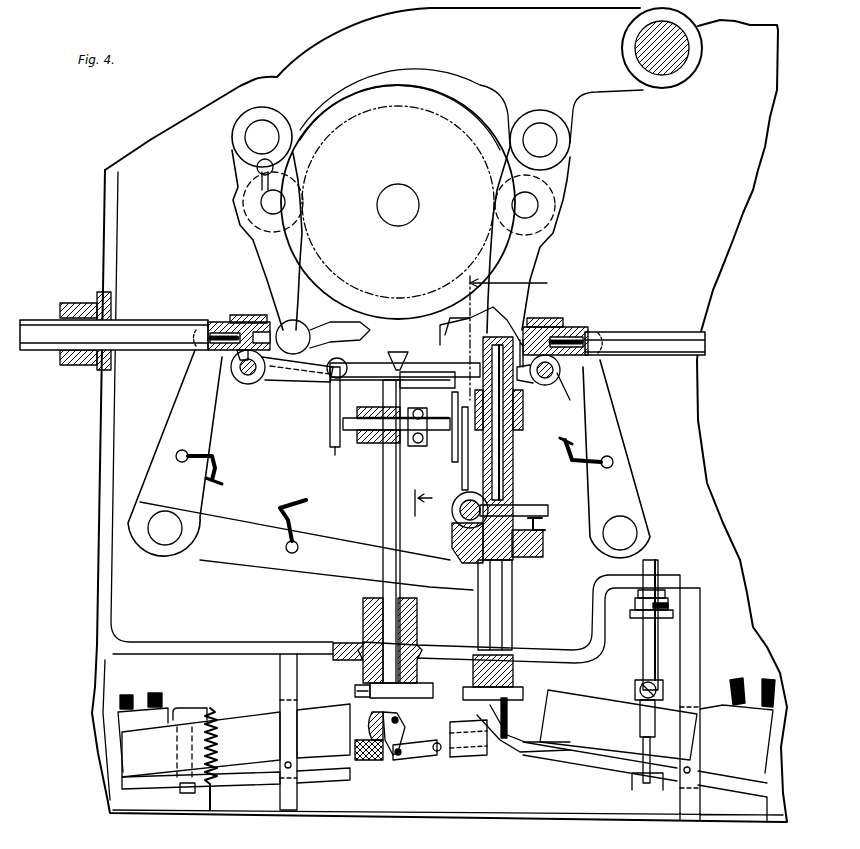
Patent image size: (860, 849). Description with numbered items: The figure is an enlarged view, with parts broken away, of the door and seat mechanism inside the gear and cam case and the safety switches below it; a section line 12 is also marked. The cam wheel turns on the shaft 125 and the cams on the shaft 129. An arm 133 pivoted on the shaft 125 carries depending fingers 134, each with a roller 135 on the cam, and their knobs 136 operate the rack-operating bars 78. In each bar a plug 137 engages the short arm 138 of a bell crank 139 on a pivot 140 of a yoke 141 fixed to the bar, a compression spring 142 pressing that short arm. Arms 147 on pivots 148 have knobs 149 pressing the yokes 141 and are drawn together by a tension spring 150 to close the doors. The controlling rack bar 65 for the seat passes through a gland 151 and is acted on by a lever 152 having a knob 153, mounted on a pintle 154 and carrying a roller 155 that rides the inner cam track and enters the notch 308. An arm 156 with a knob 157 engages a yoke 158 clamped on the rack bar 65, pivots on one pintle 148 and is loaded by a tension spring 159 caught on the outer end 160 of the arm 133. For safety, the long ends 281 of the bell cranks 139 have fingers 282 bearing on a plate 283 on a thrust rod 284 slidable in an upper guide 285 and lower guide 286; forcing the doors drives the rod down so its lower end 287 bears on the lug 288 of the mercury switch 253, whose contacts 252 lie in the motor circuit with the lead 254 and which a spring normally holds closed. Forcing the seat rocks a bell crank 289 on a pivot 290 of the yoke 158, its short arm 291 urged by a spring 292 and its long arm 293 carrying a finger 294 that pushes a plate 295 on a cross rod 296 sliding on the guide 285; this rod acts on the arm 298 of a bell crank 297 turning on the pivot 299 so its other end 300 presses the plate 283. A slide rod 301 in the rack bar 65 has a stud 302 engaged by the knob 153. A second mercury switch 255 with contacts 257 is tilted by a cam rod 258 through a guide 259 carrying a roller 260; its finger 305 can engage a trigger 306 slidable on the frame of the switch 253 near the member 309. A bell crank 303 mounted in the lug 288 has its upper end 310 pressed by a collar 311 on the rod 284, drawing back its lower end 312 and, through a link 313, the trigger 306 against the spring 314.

The section line 12 is at (491, 396).
The controlling rack bar 65 is at (512, 626).
The rack-operating bar 78 is at (37, 322).
The shaft 125 is at (668, 78).
The shaft 129 is at (410, 196).
The arm 133 is at (358, 36).
The depending finger 134 is at (240, 161).
The roller 135 is at (256, 218).
The knob 136 is at (279, 330).
The plug 137 is at (562, 325).
The short arm of bell crank 138 is at (244, 380).
The bell crank 139 is at (268, 392).
The pivot 140 is at (248, 384).
The yoke 141 is at (242, 314).
The compression spring 142 is at (225, 323).
The arm 147 is at (182, 420).
The pivot 148 is at (160, 542).
The knob 149 is at (208, 322).
The tension spring 150 is at (219, 470).
The gland 151 is at (360, 664).
The lever 152 is at (447, 338).
The knob 153 is at (514, 306).
The pintle 154 is at (312, 342).
The roller 155 is at (383, 316).
The arm 156 is at (334, 565).
The knob 157 is at (513, 576).
The yoke 158 is at (544, 540).
The tension spring 159 is at (290, 506).
The outer end of arm 160 is at (262, 190).
The contacts 252 is at (148, 694).
The mercury switch 253 is at (266, 770).
The lead 254 is at (218, 722).
The mercury switch 255 is at (670, 787).
The contacts 257 is at (760, 678).
The cam rod 258 is at (641, 728).
The guide 259 is at (660, 591).
The roller 260 is at (237, 352).
The long arm of bell crank 281 is at (330, 372).
The finger 282 is at (398, 368).
The plate 283 is at (425, 388).
The thrust rod 284 is at (391, 480).
The upper guide 285 is at (371, 444).
The lower guide 286 is at (365, 612).
The lower end of thrust rod 287 is at (372, 714).
The lug 288 is at (428, 703).
The bell crank 289 is at (462, 510).
The pivot 290 is at (455, 527).
The short arm of bell crank 291 is at (525, 506).
The spring 292 is at (545, 520).
The long arm of bell crank 293 is at (468, 445).
The finger 294 is at (520, 400).
The plate 295 is at (452, 446).
The cross rod 296 is at (455, 462).
The bell crank 297 is at (323, 420).
The arm of bell crank 298 is at (333, 446).
The pivot 299 is at (375, 391).
The end of bell crank 300 is at (352, 361).
The slide rod 301 is at (500, 470).
The stud 302 is at (541, 320).
The lever 303 is at (417, 724).
The finger 305 is at (526, 722).
The trigger 306 is at (490, 742).
The notch 308 is at (408, 86).
The block 309 is at (451, 738).
The upper end of bell crank 310 is at (433, 693).
The collar 311 is at (420, 686).
The lower end of bell crank 312 is at (396, 757).
The link 313 is at (423, 758).
The spring 314 is at (376, 760).